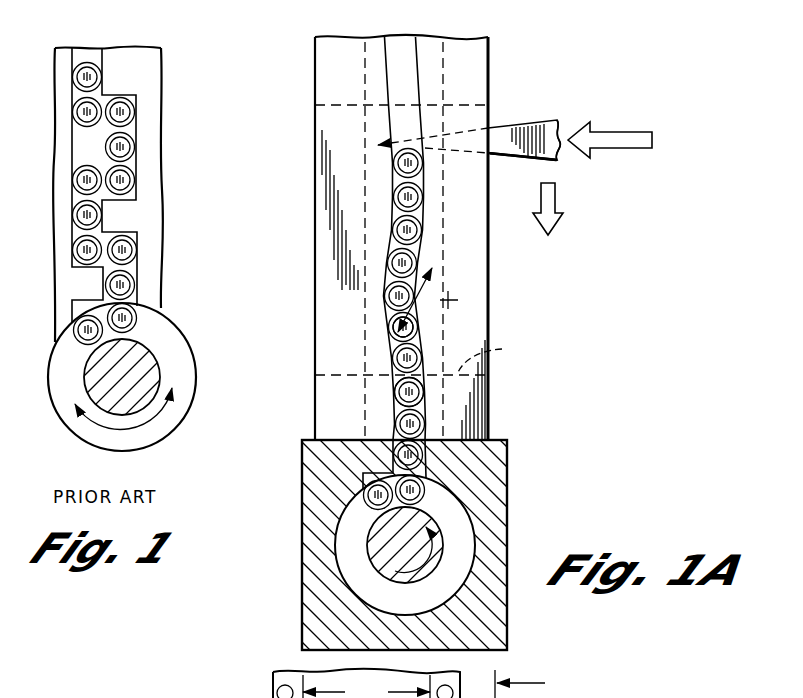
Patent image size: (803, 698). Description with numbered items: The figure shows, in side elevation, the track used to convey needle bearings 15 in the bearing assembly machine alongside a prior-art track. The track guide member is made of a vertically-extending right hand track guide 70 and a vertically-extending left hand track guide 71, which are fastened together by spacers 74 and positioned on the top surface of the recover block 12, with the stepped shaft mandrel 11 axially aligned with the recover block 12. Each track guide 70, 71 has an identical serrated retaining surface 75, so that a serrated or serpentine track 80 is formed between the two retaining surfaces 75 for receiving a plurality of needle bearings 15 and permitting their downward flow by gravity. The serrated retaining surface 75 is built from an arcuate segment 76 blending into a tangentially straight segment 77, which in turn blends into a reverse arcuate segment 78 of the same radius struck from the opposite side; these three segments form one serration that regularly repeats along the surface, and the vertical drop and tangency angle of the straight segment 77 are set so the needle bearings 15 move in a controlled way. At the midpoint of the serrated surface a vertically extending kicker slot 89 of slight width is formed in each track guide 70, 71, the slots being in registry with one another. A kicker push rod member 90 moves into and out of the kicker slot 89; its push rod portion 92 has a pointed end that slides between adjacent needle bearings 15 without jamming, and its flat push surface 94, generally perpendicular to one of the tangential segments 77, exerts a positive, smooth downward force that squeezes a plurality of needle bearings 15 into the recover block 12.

The right hand track guide 70 is at (490, 70).
The left hand track guide 71 is at (313, 58).
The serrated retaining surface 75 is at (389, 67).
The serpentine track 80 is at (403, 47).
The needle bearings 15 is at (392, 221).
The arcuate segment 76 is at (417, 298).
The tangential straight segment 77 is at (420, 345).
The kicker slot 89 is at (492, 349).
The reverse arcuate segment 78 is at (401, 400).
The kicker push rod member 90 is at (528, 128).
The push rod portion 92 is at (558, 160).
The flat push surface 94 is at (513, 157).
The recover block 12 is at (507, 482).
The stepped shaft mandrel 11 is at (408, 578).
The spacers 74 is at (276, 685).